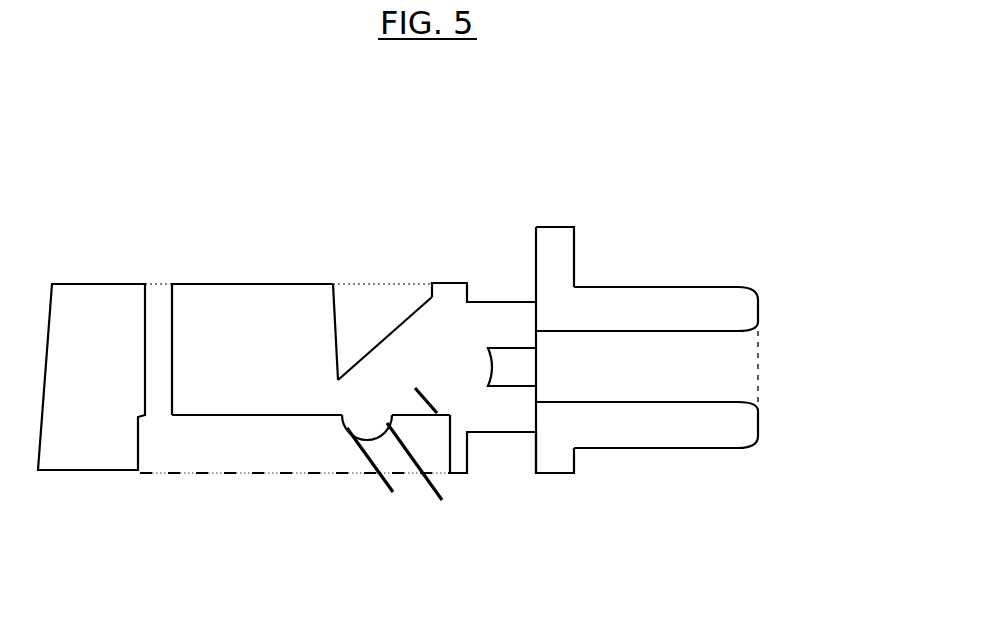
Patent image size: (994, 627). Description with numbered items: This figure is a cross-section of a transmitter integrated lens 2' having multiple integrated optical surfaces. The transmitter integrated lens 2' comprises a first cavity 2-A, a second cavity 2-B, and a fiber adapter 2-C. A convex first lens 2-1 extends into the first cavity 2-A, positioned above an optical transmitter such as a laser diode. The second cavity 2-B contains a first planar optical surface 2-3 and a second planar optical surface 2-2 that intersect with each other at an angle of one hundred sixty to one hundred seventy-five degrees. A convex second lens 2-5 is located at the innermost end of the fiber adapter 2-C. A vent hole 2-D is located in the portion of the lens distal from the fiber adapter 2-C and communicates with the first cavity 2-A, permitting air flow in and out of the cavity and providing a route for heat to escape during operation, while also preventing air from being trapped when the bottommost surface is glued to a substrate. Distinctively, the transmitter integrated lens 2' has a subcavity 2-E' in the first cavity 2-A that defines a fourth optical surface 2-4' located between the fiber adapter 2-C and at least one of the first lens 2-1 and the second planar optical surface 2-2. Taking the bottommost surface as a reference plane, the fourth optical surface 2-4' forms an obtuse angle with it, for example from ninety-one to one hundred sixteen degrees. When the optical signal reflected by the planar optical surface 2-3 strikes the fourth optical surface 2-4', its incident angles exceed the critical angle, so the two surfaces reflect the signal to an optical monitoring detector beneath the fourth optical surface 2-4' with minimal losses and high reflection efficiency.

The transmitter integrated lens 2' is at (359, 273).
The vent hole 2-D is at (153, 310).
The second cavity 2-B is at (343, 307).
The first planar optical surface 2-3 is at (372, 363).
The fourth optical surface 2-4' is at (495, 284).
The subcavity 2-E' is at (473, 407).
The convex second lens 2-5 is at (492, 362).
The fiber adapter 2-C is at (602, 373).
The convex first lens 2-1 is at (393, 492).
The second planar optical surface 2-2 is at (510, 528).
The first cavity 2-A is at (210, 448).